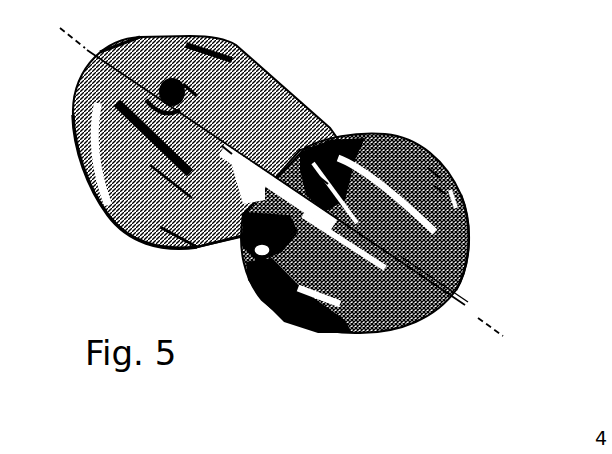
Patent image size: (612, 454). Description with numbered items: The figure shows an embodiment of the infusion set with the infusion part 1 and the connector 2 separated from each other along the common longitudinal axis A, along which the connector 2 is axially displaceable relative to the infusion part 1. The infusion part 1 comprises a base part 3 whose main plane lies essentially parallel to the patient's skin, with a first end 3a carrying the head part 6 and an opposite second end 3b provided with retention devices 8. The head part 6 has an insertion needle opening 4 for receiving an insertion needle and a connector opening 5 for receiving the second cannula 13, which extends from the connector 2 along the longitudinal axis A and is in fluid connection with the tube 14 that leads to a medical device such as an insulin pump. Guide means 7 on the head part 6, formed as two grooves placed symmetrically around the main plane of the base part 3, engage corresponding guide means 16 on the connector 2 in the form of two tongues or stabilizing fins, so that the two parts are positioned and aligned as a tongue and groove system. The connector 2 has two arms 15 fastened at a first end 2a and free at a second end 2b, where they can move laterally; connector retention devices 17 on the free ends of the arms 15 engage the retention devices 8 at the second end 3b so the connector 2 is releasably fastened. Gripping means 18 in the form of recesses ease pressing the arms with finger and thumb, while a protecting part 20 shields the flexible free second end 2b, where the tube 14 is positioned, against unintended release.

The infusion part 1 is at (165, 108).
The connector 2 is at (403, 259).
The first end 2a is at (323, 180).
The second end 2b is at (444, 192).
The base part 3 is at (255, 108).
The first end 3a is at (103, 50).
The second end 3b is at (203, 252).
The insertion needle opening 4 is at (190, 90).
The connector opening 5 is at (227, 150).
The head part 6 is at (140, 80).
The guide means 7 is at (160, 140).
The retention devices 8 is at (193, 244).
The second cannula 13 is at (313, 227).
The tube 14 is at (463, 297).
The arms 15 is at (435, 173).
The guide means 16 is at (375, 145).
The connector retention devices 17 is at (457, 210).
The gripping means 18 is at (440, 190).
The protecting part 20 is at (336, 320).
The longitudinal axis A is at (291, 190).